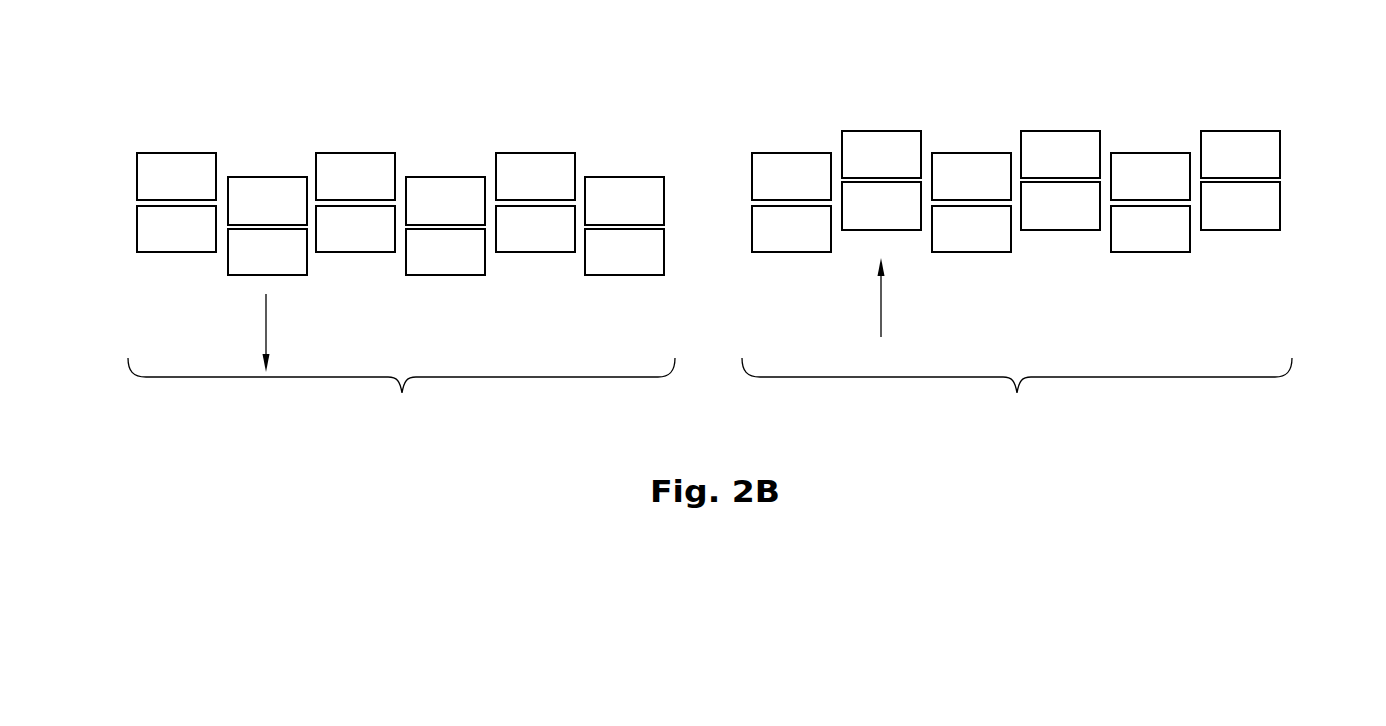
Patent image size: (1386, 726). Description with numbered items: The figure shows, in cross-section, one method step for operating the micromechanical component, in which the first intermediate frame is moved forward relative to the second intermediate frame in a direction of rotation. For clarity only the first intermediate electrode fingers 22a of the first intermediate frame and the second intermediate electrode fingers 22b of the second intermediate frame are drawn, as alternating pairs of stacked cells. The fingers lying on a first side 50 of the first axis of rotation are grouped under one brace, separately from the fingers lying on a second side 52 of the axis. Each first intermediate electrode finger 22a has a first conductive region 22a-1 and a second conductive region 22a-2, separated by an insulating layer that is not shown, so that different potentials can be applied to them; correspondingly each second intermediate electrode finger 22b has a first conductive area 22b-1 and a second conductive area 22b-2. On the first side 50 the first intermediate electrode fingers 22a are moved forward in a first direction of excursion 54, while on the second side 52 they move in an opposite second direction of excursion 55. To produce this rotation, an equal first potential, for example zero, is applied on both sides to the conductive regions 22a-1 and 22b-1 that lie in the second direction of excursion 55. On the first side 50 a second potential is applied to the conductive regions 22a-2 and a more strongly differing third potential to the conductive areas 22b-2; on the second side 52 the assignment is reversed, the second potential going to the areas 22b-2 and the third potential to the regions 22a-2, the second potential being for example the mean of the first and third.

The first intermediate electrode fingers 22a is at (806, 192).
The second intermediate electrode fingers 22b is at (607, 203).
The first conductive region 22a-1 is at (653, 203).
The second conductive region 22a-2 is at (655, 250).
The first conductive area 22b-1 is at (147, 177).
The second conductive area 22b-2 is at (147, 227).
The first side 50 is at (401, 395).
The second side 52 is at (1017, 395).
The first direction of excursion 54 is at (267, 320).
The second direction of excursion 55 is at (882, 295).